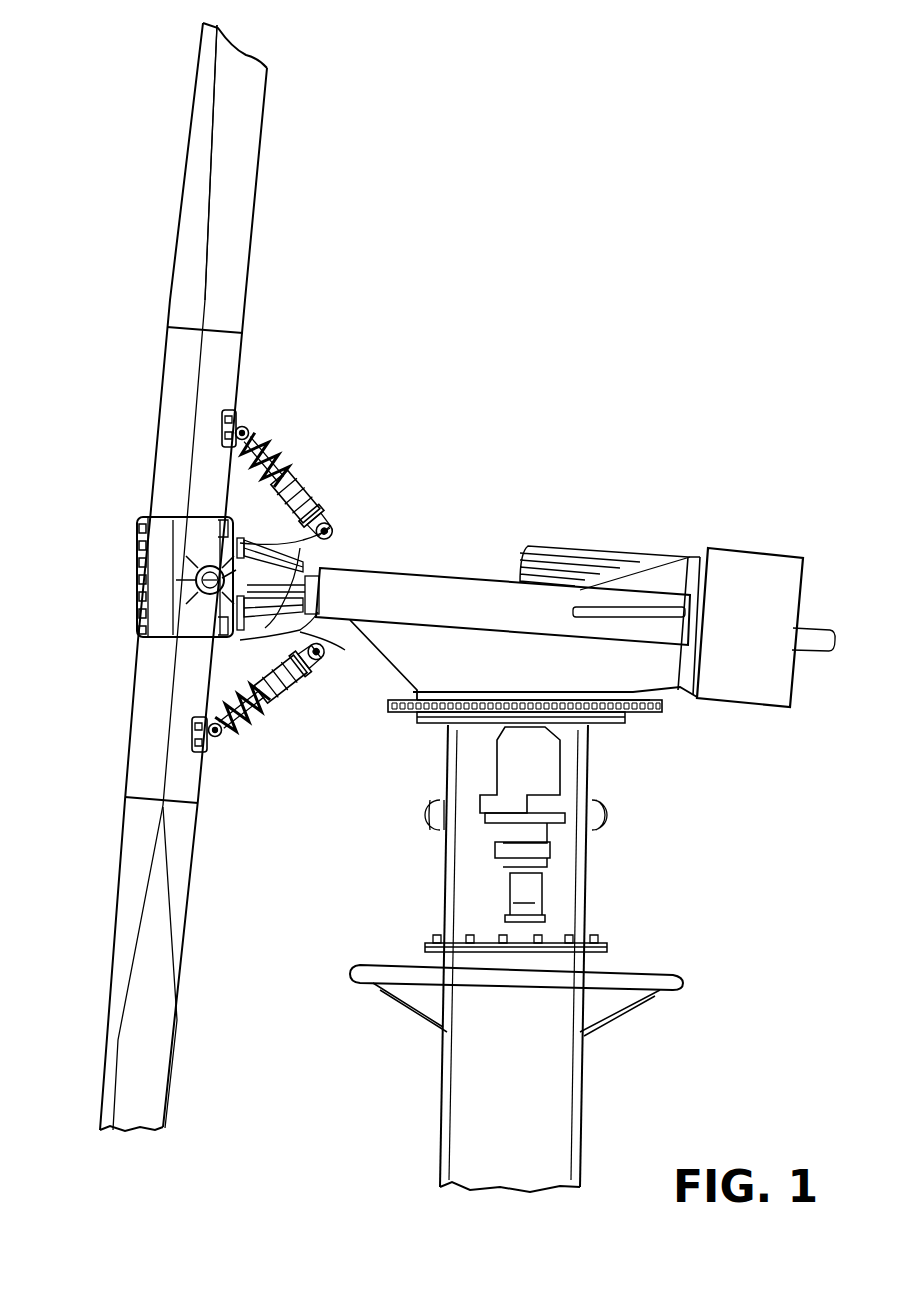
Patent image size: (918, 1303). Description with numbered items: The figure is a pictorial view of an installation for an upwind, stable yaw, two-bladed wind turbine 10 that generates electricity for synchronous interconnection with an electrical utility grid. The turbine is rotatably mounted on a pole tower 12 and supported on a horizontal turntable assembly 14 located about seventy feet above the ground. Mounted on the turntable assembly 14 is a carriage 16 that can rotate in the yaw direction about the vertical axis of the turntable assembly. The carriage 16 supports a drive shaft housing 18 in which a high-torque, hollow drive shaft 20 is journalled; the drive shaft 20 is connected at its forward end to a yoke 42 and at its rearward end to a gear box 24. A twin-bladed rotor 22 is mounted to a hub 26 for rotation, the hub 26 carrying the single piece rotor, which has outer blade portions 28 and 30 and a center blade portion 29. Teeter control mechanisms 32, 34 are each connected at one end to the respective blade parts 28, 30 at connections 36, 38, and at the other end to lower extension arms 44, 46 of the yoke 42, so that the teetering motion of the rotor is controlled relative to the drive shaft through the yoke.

The wind turbine 10 is at (405, 372).
The pole tower 12 is at (555, 1097).
The turntable assembly 14 is at (640, 714).
The carriage 16 is at (538, 676).
The drive shaft housing 18 is at (470, 621).
The drive shaft 20 is at (320, 567).
The rotor 22 is at (122, 664).
The gear box 24 is at (763, 626).
The hub 26 is at (130, 532).
The outer blade portion 28 is at (177, 233).
The center blade portion 29 is at (108, 601).
The outer blade portion 30 is at (113, 912).
The teeter control mechanism 32 is at (297, 480).
The teeter control mechanism 34 is at (262, 700).
The connection 36 is at (236, 423).
The connection 38 is at (210, 741).
The yoke 42 is at (282, 610).
The lower extension arm 44 is at (318, 630).
The lower extension arm 46 is at (330, 541).